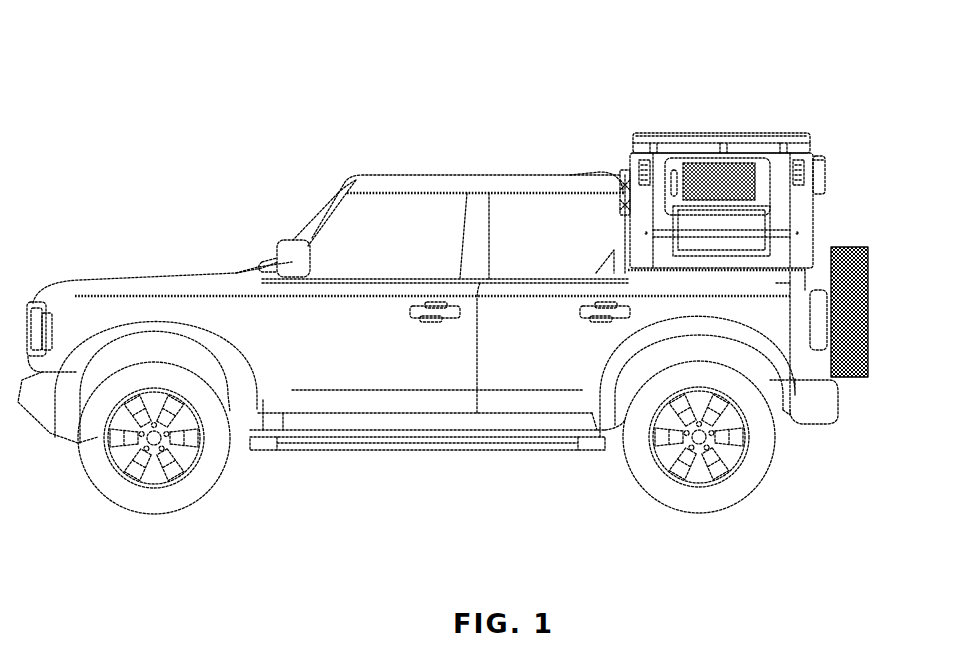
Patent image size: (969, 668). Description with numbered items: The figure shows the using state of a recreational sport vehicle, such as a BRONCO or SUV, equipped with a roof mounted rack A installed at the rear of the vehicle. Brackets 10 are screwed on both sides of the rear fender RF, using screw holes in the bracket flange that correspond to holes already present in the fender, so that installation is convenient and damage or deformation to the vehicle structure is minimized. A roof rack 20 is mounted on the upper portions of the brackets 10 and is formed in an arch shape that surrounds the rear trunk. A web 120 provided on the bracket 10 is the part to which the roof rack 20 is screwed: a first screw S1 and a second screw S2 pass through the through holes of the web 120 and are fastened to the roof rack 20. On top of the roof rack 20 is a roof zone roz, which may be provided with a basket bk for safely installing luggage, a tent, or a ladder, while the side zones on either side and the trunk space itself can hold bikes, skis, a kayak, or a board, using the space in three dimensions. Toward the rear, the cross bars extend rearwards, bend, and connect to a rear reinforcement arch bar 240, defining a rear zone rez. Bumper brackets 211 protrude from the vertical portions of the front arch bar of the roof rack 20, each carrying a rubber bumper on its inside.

The roof mounted rack A is at (619, 94).
The bracket 10 is at (871, 300).
The roof rack 20 is at (828, 209).
The web 120 is at (869, 312).
The bumper bracket 211 is at (604, 183).
The rear reinforcement arch bar 240 is at (826, 192).
The roof zone roz is at (677, 134).
The basket bk is at (789, 127).
The rear zone rez is at (827, 168).
The rear fender RF is at (866, 291).
The first screw S1 is at (617, 318).
The second screw S2 is at (780, 290).